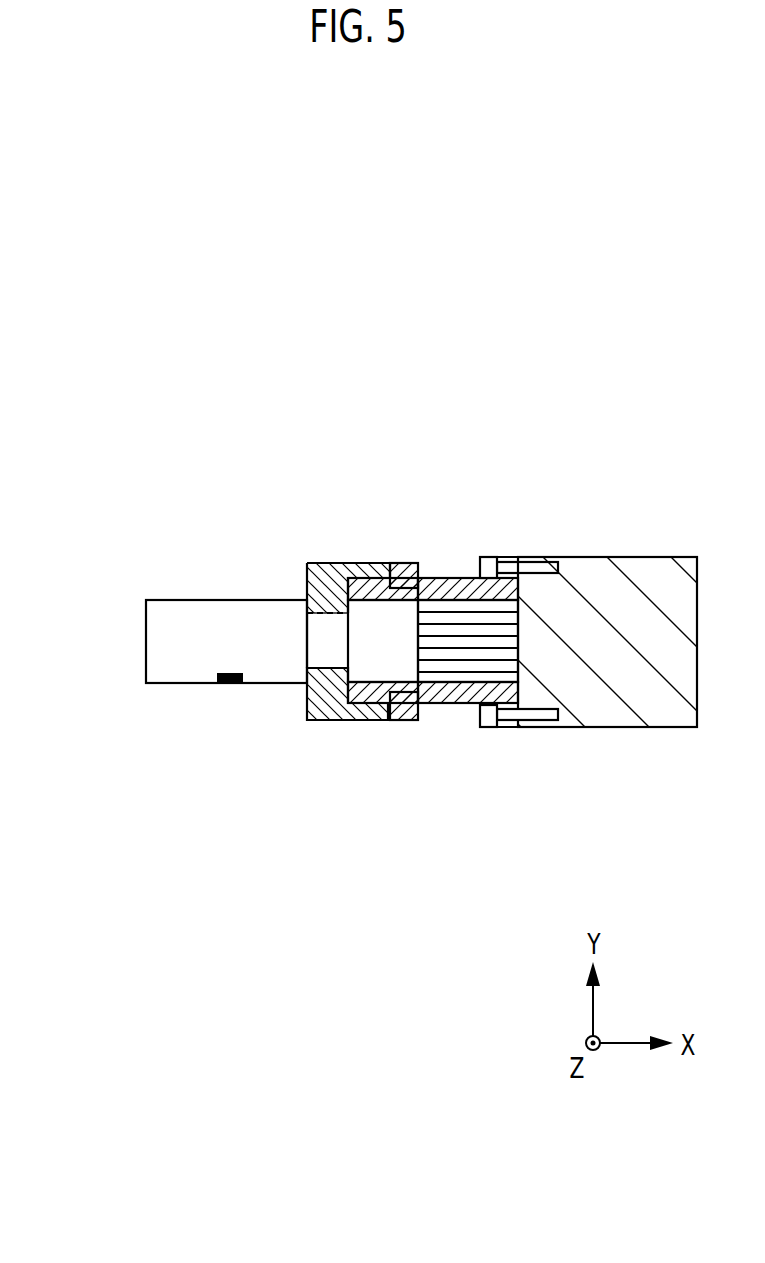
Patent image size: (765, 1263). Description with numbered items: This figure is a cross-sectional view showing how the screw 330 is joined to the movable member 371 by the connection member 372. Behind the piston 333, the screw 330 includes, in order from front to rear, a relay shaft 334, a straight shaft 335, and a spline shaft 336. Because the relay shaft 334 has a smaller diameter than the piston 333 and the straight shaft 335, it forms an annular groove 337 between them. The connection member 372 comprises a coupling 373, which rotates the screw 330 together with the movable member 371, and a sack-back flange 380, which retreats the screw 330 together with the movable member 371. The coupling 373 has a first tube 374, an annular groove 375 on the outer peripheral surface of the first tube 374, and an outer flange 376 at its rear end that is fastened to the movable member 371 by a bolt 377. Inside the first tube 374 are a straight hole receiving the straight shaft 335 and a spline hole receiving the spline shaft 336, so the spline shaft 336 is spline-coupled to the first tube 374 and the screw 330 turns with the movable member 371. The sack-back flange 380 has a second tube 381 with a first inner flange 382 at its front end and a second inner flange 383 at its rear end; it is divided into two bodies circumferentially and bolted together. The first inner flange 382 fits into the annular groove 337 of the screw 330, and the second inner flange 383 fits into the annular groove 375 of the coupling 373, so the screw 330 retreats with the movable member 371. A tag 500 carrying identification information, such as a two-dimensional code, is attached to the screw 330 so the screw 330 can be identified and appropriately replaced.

The screw 330 is at (175, 642).
The piston 333 is at (198, 612).
The relay shaft 334 is at (328, 620).
The straight shaft 335 is at (367, 622).
The spline shaft 336 is at (453, 668).
The annular groove 337 is at (312, 595).
The movable member 371 is at (643, 568).
The connection member 372 is at (334, 538).
The coupling 373 is at (462, 548).
The first tube 374 is at (452, 590).
The annular groove 375 is at (403, 590).
The outer flange 376 is at (524, 514).
The bolt 377 is at (530, 712).
The sack-back flange 380 is at (369, 763).
The second tube 381 is at (368, 710).
The first inner flange 382 is at (328, 693).
The second inner flange 383 is at (421, 747).
The tag 500 is at (232, 684).